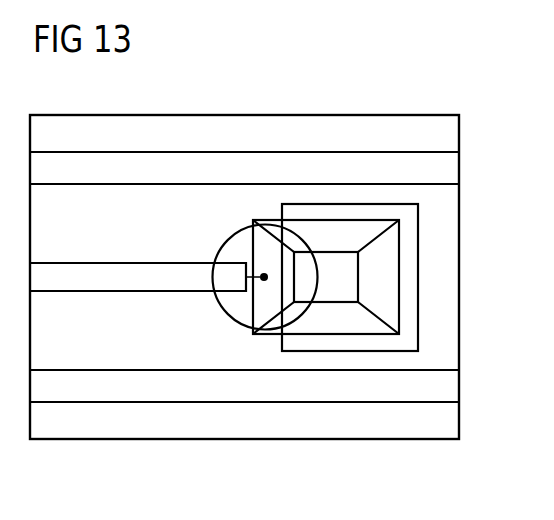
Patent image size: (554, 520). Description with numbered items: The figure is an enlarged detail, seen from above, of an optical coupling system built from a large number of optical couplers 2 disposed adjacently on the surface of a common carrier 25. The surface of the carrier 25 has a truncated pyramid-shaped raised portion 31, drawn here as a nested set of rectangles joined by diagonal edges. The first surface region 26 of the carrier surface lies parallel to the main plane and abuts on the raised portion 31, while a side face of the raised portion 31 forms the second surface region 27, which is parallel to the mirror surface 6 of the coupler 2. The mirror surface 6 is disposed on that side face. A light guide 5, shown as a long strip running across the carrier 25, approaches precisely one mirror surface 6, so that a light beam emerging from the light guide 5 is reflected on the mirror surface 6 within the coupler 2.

The carrier 25 is at (258, 124).
The first surface region 26 is at (102, 337).
The light guide 5 is at (124, 272).
The optical coupler 2 is at (222, 244).
The second surface region 27 is at (216, 308).
The mirror surface 6 is at (265, 298).
The raised portion 31 is at (429, 258).